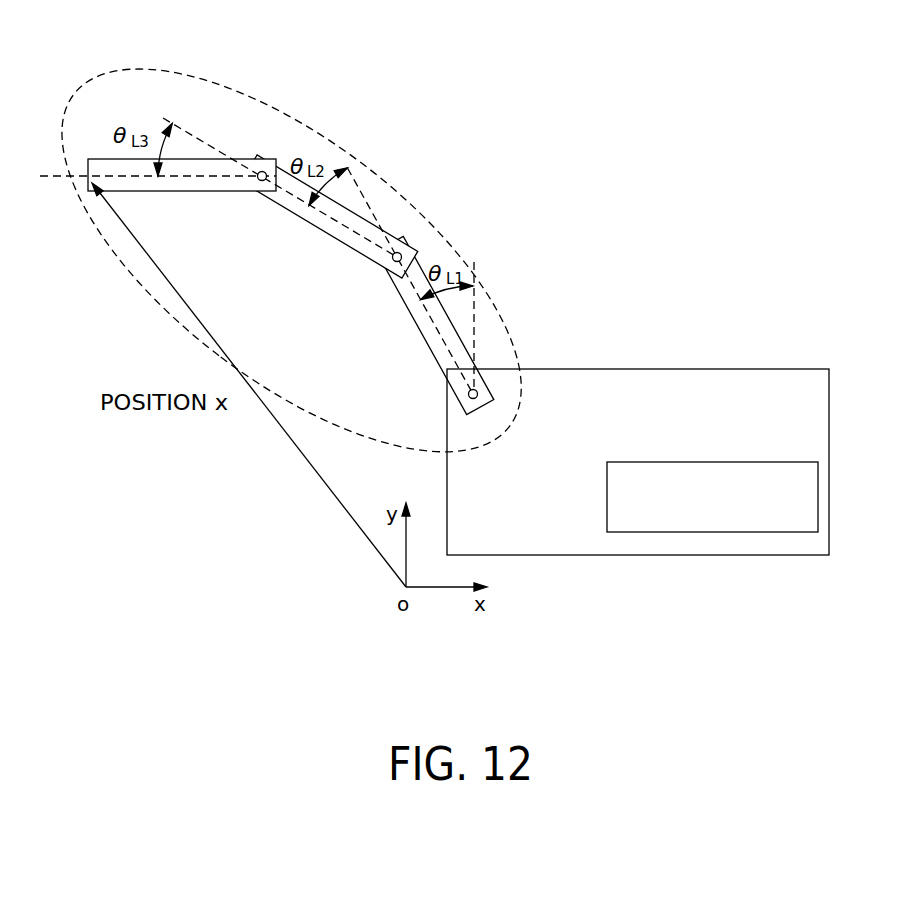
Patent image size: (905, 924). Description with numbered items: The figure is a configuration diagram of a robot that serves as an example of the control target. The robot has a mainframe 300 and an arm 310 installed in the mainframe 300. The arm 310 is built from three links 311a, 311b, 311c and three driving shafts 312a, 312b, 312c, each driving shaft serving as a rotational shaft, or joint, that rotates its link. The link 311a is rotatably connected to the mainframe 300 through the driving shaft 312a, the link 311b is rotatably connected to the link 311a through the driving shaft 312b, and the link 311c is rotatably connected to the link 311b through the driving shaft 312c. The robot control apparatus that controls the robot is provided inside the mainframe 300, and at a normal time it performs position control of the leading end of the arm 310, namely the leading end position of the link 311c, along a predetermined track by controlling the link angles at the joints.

The arm 310 is at (250, 115).
The link 311a is at (433, 337).
The link 311b is at (355, 218).
The link 311c is at (142, 185).
The driving shaft 312a is at (478, 389).
The driving shaft 312b is at (403, 256).
The driving shaft 312c is at (262, 182).
The mainframe 300 is at (747, 387).